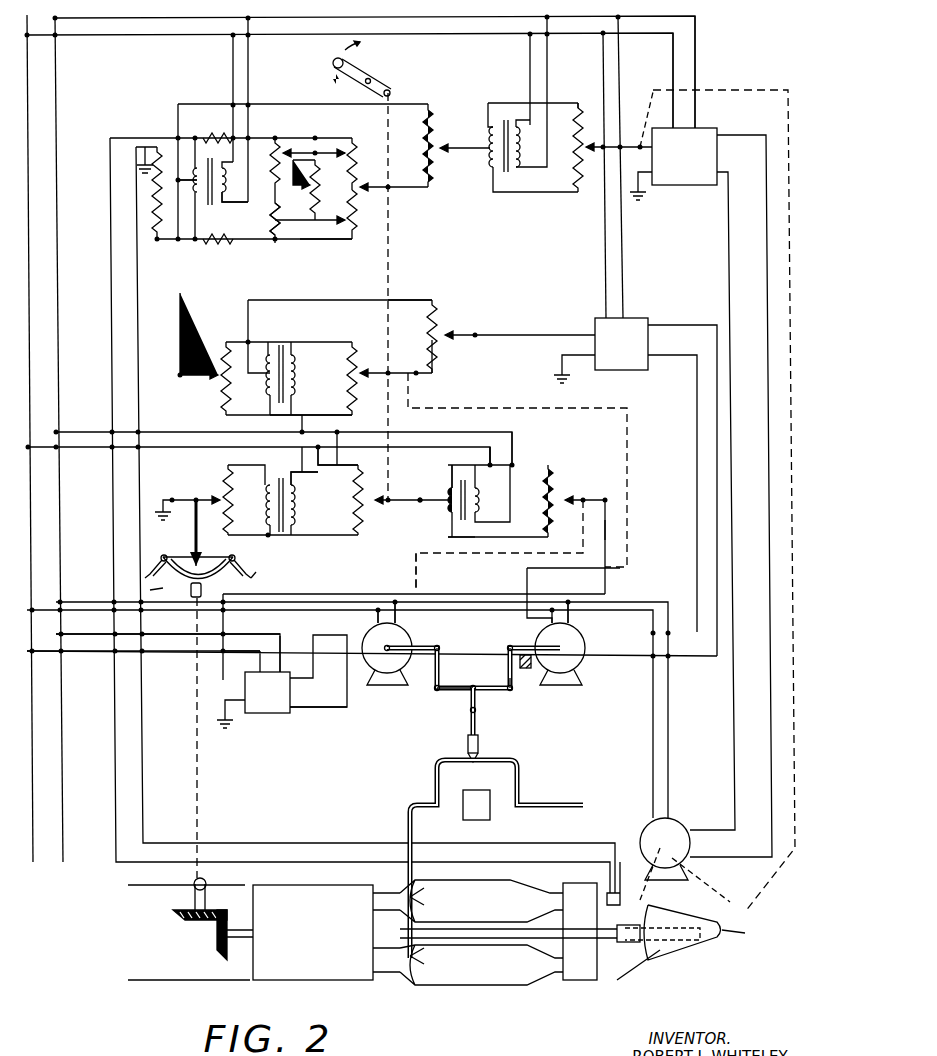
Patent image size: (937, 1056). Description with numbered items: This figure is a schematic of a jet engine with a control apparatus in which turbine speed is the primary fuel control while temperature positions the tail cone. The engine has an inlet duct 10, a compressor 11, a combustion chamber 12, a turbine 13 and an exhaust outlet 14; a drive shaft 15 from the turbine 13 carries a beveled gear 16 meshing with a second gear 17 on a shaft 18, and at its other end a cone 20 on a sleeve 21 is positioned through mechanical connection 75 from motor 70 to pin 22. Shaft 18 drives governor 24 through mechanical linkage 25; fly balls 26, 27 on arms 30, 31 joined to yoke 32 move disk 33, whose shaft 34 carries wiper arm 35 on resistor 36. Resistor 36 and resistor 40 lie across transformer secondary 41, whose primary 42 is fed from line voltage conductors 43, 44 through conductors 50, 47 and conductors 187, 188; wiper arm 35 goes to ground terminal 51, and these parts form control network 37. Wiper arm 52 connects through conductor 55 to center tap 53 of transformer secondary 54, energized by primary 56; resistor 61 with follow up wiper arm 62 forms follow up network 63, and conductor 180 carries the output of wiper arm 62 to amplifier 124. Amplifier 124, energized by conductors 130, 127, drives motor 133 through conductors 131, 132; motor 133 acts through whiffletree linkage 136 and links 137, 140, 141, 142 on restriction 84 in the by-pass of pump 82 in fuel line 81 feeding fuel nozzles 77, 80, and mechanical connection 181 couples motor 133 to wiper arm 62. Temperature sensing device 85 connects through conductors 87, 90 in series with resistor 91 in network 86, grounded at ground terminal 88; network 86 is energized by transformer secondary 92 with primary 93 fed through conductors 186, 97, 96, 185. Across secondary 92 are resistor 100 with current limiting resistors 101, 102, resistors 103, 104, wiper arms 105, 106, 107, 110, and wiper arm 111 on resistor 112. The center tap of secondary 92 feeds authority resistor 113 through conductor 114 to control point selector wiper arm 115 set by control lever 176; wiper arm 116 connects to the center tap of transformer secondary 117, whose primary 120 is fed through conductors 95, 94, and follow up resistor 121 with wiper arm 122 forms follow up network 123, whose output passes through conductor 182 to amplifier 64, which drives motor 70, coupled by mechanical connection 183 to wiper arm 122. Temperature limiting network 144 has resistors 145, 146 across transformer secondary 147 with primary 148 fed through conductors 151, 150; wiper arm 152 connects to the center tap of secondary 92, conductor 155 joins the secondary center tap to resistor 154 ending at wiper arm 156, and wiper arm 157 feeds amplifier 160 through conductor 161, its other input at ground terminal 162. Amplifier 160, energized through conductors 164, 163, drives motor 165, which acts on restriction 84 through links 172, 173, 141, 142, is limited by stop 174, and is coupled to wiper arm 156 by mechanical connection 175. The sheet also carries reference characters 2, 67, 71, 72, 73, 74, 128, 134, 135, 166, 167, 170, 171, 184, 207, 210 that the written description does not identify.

The power supply bus 2 is at (361, 70).
The inlet duct 10 is at (155, 975).
The compressor 11 is at (274, 972).
The combustion chamber 12 is at (515, 878).
The turbine 13 is at (580, 975).
The exhaust outlet 14 is at (672, 965).
The drive shaft 15 is at (540, 972).
The beveled gear 16 is at (216, 941).
The second gear 17 is at (180, 918).
The shaft 18 is at (194, 890).
The cone 20 is at (745, 933).
The sleeve 21 is at (621, 942).
The pin 22 is at (636, 968).
The governor 24 is at (152, 601).
The mechanical linkage 25 is at (192, 756).
The fly ball 26 is at (150, 590).
The fly ball 27 is at (254, 576).
The arm 30 is at (176, 554).
The arm 31 is at (237, 553).
The yoke 32 is at (220, 575).
The disk 33 is at (199, 557).
The shaft 34 is at (194, 540).
The wiper arm 35 is at (197, 500).
The resistor 36 is at (224, 478).
The control network 37 is at (280, 555).
The resistor 40 is at (362, 515).
The transformer secondary 41 is at (266, 496).
The transformer primary 42 is at (295, 498).
The line voltage conductor 43 is at (29, 78).
The line voltage conductor 44 is at (57, 93).
The conductor 47 is at (340, 456).
The conductor 50 is at (302, 468).
The ground terminal 51 is at (160, 506).
The wiper arm 52 is at (420, 505).
The center tap 53 is at (448, 500).
The transformer secondary 54 is at (446, 488).
The conductor 55 is at (455, 535).
The transformer primary 56 is at (477, 498).
The resistor 61 is at (553, 480).
The follow up wiper arm 62 is at (586, 500).
The follow up network 63 is at (474, 573).
The amplifier 64 is at (686, 209).
The ground 67 is at (648, 197).
The motor 70 is at (604, 825).
The motor lead 71 is at (728, 251).
The motor lead 72 is at (766, 253).
The supply lead 73 is at (300, 594).
The supply lead 74 is at (278, 616).
The mechanical connection 75 is at (650, 892).
The fuel nozzle 77 is at (420, 888).
The fuel nozzle 80 is at (418, 968).
The fuel line 81 is at (407, 821).
The pump 82 is at (480, 818).
The restriction 84 is at (464, 748).
The temperature sensing device 85 is at (623, 874).
The network 86 is at (309, 99).
The conductor 87 is at (112, 275).
The ground terminal 88 is at (145, 146).
The conductor 90 is at (141, 336).
The resistor 91 is at (156, 215).
The transformer secondary 92 is at (197, 180).
The transformer primary 93 is at (223, 181).
The conductor 94 is at (549, 78).
The conductor 95 is at (530, 74).
The conductor 96 is at (250, 78).
The conductor 97 is at (232, 75).
The resistor 100 is at (368, 214).
The current limiting resistor 101 is at (213, 132).
The current limiting resistor 102 is at (210, 245).
The resistor 103 is at (264, 191).
The resistor 104 is at (274, 216).
The wiper arm 105 is at (340, 151).
The wiper arm 106 is at (320, 239).
The wiper arm 107 is at (290, 153).
The wiper arm 110 is at (283, 240).
The wiper arm 111 is at (290, 186).
The resistor 112 is at (317, 178).
The authority resistor 113 is at (432, 102).
The conductor 114 is at (402, 296).
The control point selector wiper arm 115 is at (360, 154).
The wiper arm 116 is at (450, 151).
The transformer secondary 117 is at (490, 140).
The transformer primary 120 is at (510, 155).
The follow up resistor 121 is at (574, 172).
The wiper arm 122 is at (580, 112).
The follow up network 123 is at (523, 219).
The amplifier 124 is at (255, 744).
The conductor 127 is at (192, 636).
The ground 128 is at (215, 712).
The conductor 130 is at (150, 655).
The conductor 131 is at (300, 669).
The conductor 132 is at (305, 710).
The motor 133 is at (353, 653).
The motor lead 134 is at (398, 620).
The motor lead 135 is at (376, 617).
The whiffletree linkage 136 is at (460, 667).
The link 137 is at (414, 648).
The link 140 is at (432, 690).
The link 141 is at (461, 688).
The link 142 is at (480, 700).
The network 144 is at (327, 289).
The resistor 145 is at (220, 400).
The resistor 146 is at (354, 346).
The transformer secondary 147 is at (270, 352).
The transformer primary 148 is at (292, 354).
The conductor 150 is at (292, 420).
The conductor 151 is at (352, 380).
The wiper arm 152 is at (210, 370).
The resistor 154 is at (440, 330).
The conductor 155 is at (398, 300).
The wiper arm 156 is at (414, 353).
The wiper arm 157 is at (452, 340).
The amplifier 160 is at (610, 393).
The conductor 161 is at (506, 333).
The ground terminal 162 is at (555, 374).
The conductor 163 is at (622, 290).
The conductor 164 is at (605, 276).
The motor 165 is at (571, 703).
The motor lead 166 is at (696, 434).
The motor lead 167 is at (716, 315).
The motor lead 170 is at (574, 622).
The motor lead 171 is at (535, 585).
The link 172 is at (520, 650).
The link 173 is at (516, 680).
The stop 174 is at (530, 672).
The mechanical connection 175 is at (630, 510).
The control lever 176 is at (375, 72).
The conductor 180 is at (605, 530).
The mechanical connection 181 is at (410, 575).
The conductor 182 is at (631, 121).
The mechanical connection 183 is at (710, 90).
The lead 184 is at (182, 293).
The conductor 185 is at (697, 55).
The conductor 186 is at (672, 62).
The conductor 187 is at (487, 458).
The conductor 188 is at (514, 437).
The potentiometer 207 is at (275, 140).
The lead 210 is at (259, 263).